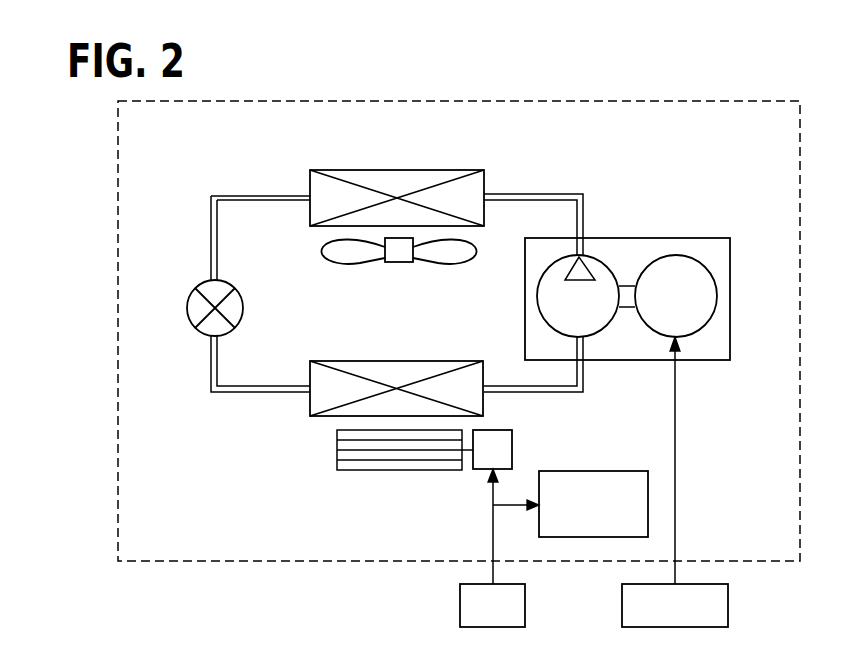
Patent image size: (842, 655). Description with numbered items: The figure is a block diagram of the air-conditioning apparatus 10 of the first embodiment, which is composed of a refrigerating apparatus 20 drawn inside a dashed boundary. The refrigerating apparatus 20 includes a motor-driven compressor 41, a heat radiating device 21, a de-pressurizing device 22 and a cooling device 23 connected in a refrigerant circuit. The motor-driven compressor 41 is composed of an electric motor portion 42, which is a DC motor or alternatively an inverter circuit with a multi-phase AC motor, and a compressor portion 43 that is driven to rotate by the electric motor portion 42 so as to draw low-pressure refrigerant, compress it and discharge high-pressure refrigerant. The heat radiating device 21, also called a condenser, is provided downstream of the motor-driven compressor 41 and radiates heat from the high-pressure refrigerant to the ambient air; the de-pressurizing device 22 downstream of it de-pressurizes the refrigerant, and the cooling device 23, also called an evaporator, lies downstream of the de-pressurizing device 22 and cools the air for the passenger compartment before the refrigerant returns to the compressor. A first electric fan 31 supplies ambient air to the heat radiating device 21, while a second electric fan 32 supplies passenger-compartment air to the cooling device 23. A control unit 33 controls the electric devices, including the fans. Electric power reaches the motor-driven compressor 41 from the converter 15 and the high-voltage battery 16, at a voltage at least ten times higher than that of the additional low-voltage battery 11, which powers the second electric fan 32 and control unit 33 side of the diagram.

The air-conditioning apparatus 10 is at (748, 100).
The additional low-voltage battery 11 is at (499, 548).
The converter 15 is at (675, 482).
The high-voltage battery 16 is at (675, 482).
The refrigerating apparatus 20 is at (541, 180).
The heat radiating device 21 is at (447, 178).
The de-pressurizing device 22 is at (205, 285).
The cooling device 23 is at (332, 360).
The first electric fan 31 is at (398, 264).
The second electric fan 32 is at (512, 441).
The control unit 33 is at (616, 471).
The motor-driven compressor 41 is at (627, 276).
The electric motor portion 42 is at (641, 260).
The compressor portion 43 is at (604, 258).